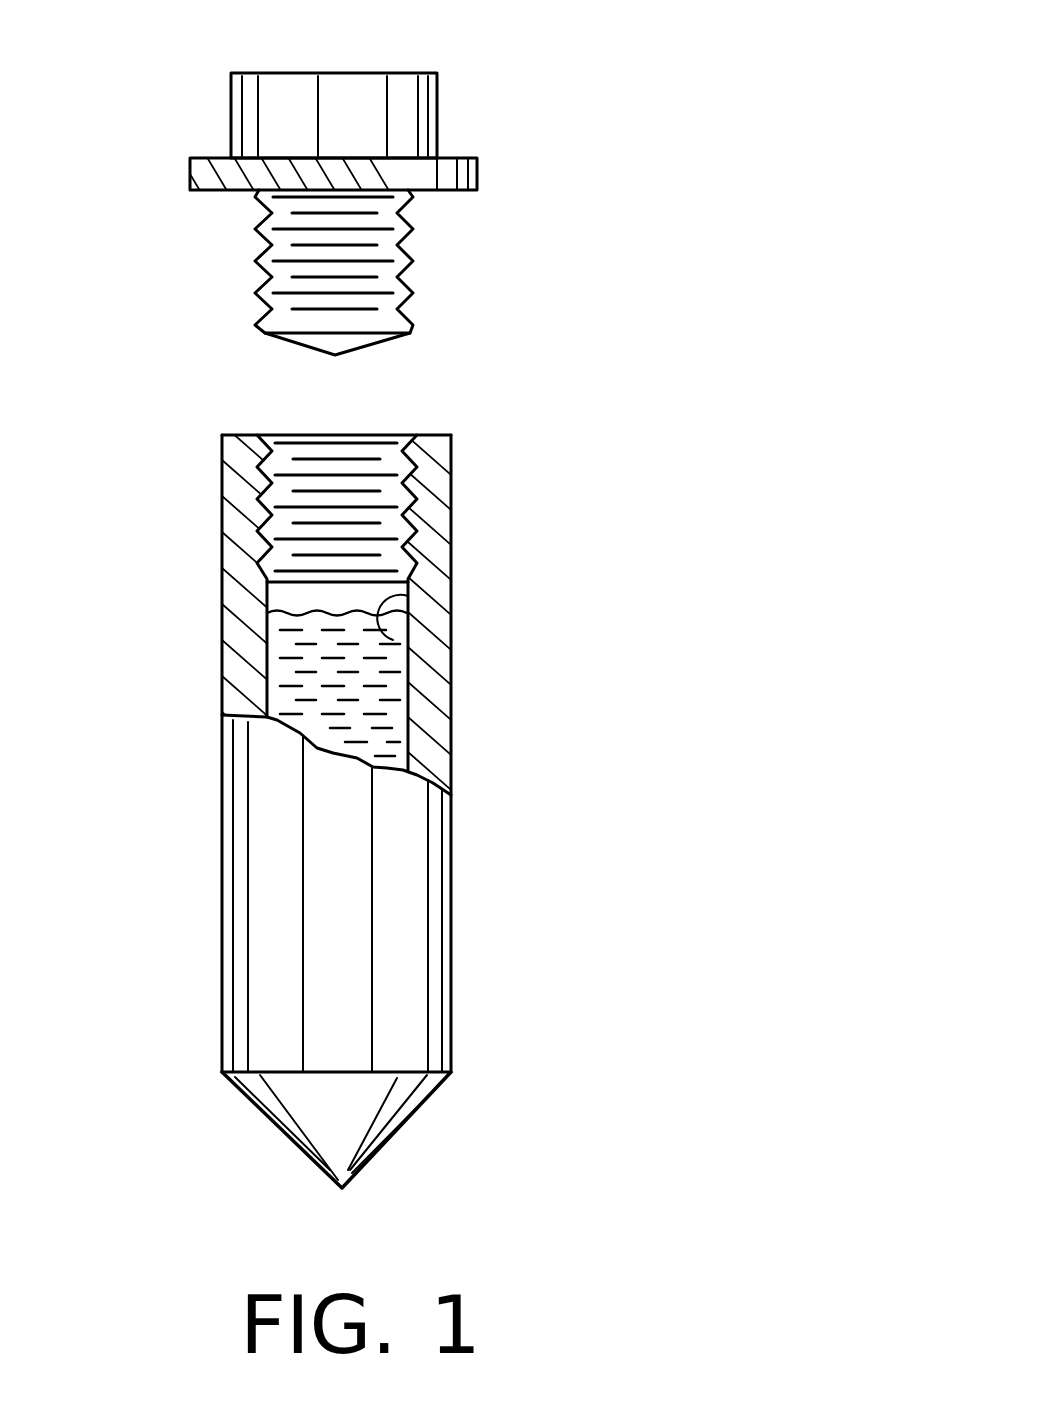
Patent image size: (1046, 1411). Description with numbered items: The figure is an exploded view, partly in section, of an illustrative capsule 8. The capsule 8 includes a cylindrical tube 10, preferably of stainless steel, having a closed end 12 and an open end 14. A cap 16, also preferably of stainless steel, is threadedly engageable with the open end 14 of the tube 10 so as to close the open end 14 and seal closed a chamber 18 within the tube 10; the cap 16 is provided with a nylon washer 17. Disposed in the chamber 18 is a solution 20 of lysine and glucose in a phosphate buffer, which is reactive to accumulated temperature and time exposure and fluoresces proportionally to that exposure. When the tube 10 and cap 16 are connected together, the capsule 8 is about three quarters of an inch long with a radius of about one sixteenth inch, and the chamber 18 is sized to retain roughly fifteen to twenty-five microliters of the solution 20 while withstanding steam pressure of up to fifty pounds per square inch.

The capsule 8 is at (669, 468).
The cylindrical tube 10 is at (407, 875).
The closed end 12 is at (392, 1140).
The open end 14 is at (431, 434).
The cap 16 is at (439, 80).
The nylon washer 17 is at (482, 172).
The chamber 18 is at (390, 642).
The solution 20 is at (293, 672).